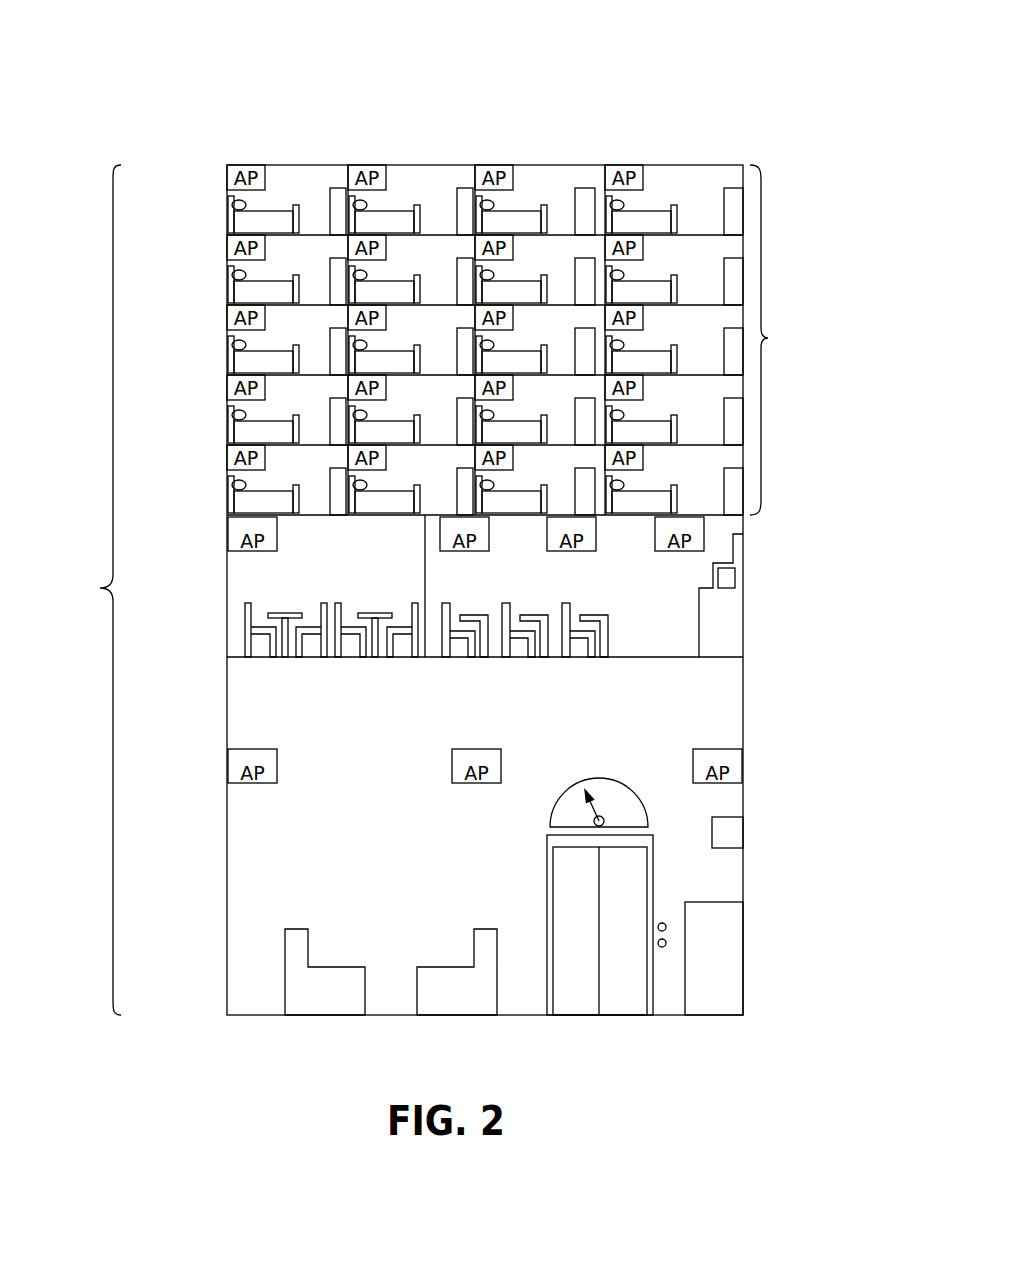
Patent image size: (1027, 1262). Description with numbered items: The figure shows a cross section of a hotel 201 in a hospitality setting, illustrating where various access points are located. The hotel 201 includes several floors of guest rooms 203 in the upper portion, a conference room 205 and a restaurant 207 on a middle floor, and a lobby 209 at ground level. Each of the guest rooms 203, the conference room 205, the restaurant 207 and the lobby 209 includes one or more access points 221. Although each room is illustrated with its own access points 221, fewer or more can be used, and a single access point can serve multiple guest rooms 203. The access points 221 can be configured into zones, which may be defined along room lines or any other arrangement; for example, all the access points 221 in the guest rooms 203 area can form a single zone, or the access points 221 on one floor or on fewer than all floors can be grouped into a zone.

The hotel 201 is at (113, 78).
The guest rooms 203 is at (800, 255).
The conference room 205 is at (756, 608).
The restaurant 207 is at (216, 608).
The lobby 209 is at (757, 716).
The access points 221 is at (615, 165).